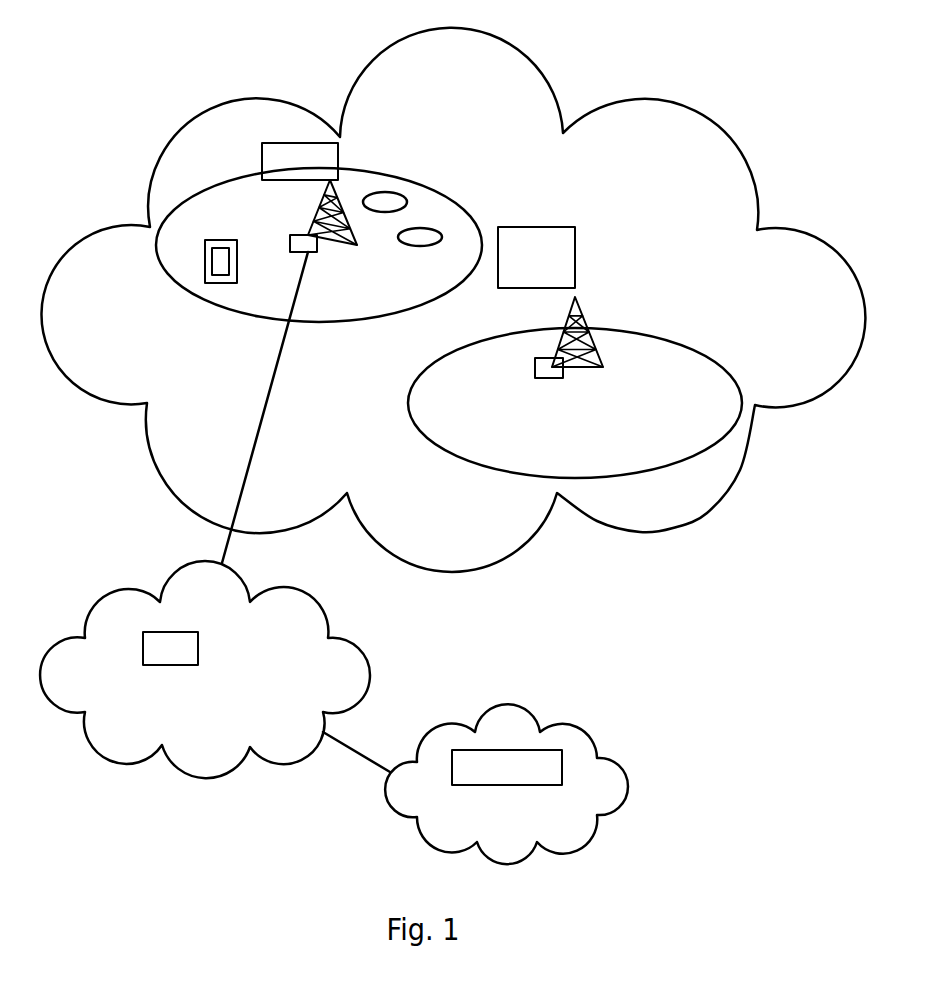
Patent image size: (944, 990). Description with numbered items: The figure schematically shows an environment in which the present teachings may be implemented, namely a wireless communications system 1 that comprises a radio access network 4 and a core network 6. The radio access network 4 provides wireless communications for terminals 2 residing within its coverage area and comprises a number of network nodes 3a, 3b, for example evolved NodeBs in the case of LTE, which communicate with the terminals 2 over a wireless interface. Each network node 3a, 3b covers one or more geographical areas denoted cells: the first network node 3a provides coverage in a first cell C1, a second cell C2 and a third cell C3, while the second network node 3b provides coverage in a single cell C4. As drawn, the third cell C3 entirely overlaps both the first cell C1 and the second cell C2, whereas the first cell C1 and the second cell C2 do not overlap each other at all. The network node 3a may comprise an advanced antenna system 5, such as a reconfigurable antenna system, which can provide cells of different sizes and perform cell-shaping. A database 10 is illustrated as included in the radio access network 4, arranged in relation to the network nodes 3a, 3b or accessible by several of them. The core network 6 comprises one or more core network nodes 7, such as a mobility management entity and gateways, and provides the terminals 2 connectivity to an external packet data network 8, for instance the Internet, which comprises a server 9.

The wireless communications system 1 is at (688, 92).
The terminal 2 is at (205, 260).
The first network node 3a is at (312, 250).
The second network node 3b is at (558, 373).
The radio access network 4 is at (115, 267).
The antenna system 5 is at (338, 146).
The core network 6 is at (340, 676).
The core network node 7 is at (183, 651).
The external packet data network 8 is at (607, 790).
The server 9 is at (598, 755).
The database 10 is at (575, 252).
The first cell C1 is at (407, 200).
The second cell C2 is at (420, 240).
The third cell C3 is at (255, 192).
The fourth cell C4 is at (658, 362).